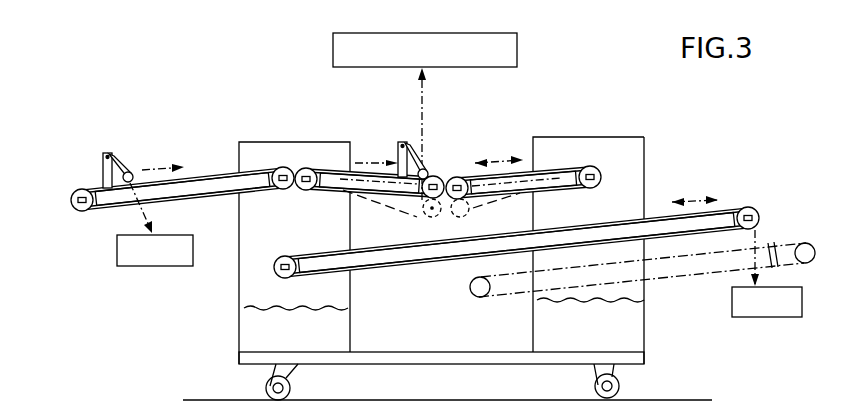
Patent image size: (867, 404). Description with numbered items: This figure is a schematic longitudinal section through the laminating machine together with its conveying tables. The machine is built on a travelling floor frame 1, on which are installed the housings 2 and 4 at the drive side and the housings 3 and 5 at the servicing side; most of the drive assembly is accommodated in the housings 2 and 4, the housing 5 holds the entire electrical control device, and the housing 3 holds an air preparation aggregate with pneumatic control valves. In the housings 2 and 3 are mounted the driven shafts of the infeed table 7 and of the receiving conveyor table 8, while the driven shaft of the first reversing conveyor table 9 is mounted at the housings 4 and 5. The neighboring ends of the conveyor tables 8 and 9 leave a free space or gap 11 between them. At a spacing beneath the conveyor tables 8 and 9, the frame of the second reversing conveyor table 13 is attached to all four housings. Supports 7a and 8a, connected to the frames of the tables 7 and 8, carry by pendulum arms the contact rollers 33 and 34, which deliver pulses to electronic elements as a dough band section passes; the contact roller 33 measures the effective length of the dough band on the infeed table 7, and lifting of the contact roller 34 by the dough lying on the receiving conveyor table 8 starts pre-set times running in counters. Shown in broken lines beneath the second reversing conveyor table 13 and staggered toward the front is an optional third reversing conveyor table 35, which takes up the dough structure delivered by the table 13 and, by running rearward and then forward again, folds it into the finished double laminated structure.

The travelling floor frame 1 is at (449, 357).
The housing 2 is at (251, 333).
The housing 3 is at (265, 145).
The housing 4 is at (640, 333).
The housing 5 is at (594, 144).
The infeed table 7 is at (202, 171).
The support 7a is at (104, 164).
The receiving conveyor table 8 is at (331, 170).
The support 8a is at (399, 150).
The first reversing conveyor table 9 is at (548, 175).
The space or gap 11 is at (446, 218).
The second reversing conveyor table 13 is at (662, 213).
The contact roller 33 is at (131, 172).
The contact roller 34 is at (427, 171).
The third reversing conveyor table 35 is at (680, 270).